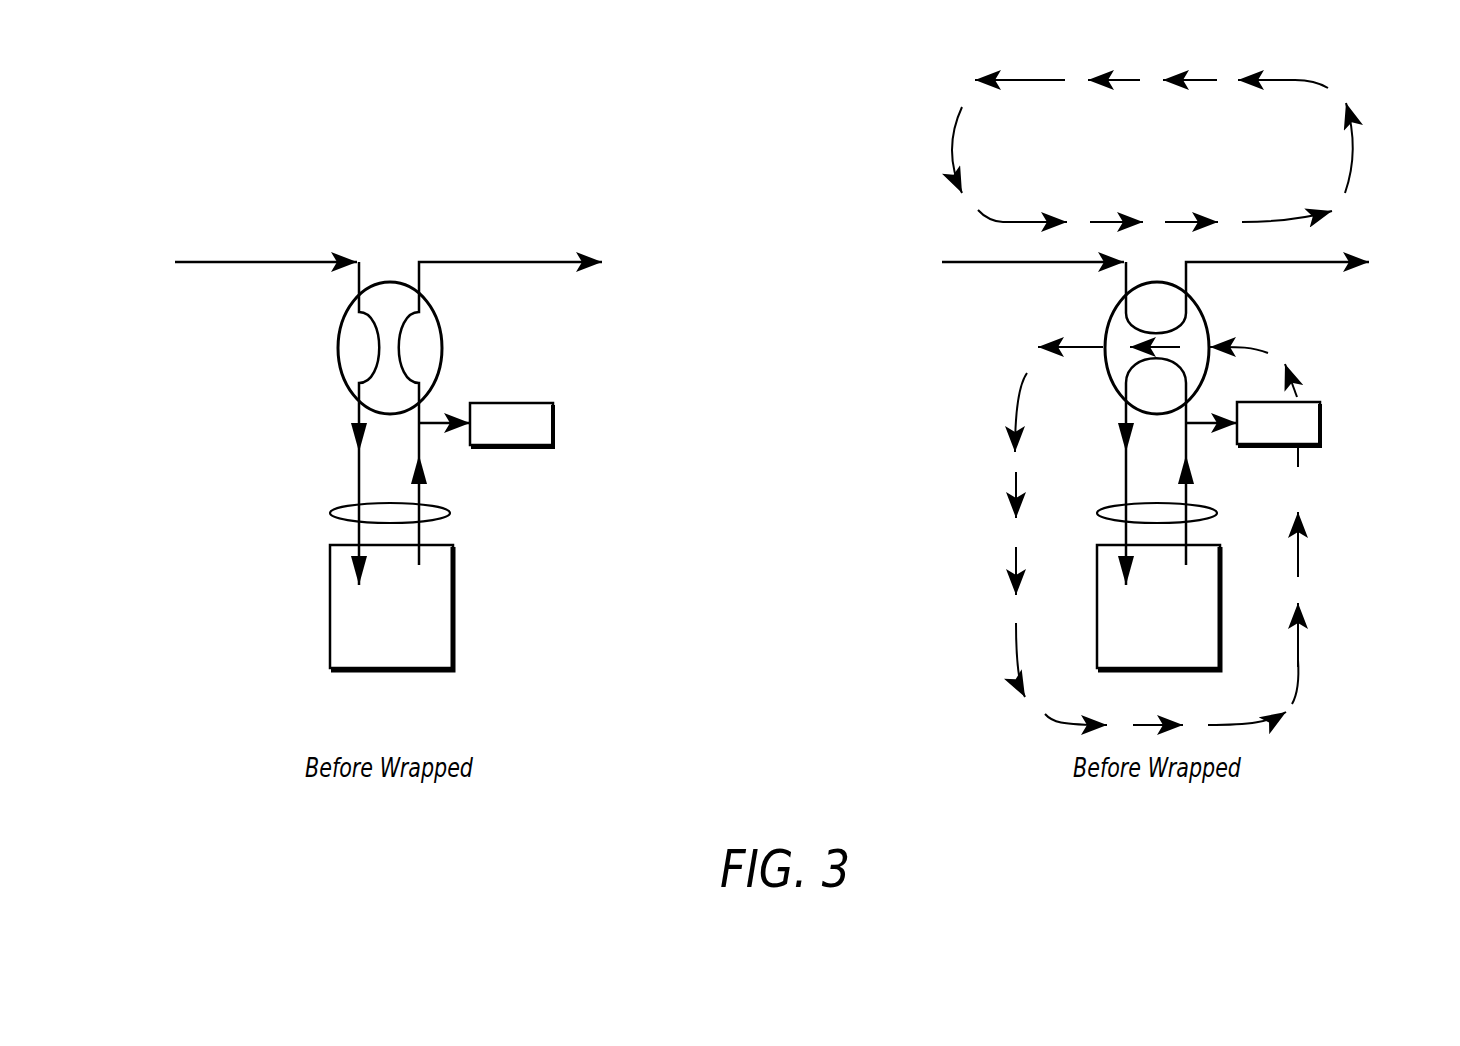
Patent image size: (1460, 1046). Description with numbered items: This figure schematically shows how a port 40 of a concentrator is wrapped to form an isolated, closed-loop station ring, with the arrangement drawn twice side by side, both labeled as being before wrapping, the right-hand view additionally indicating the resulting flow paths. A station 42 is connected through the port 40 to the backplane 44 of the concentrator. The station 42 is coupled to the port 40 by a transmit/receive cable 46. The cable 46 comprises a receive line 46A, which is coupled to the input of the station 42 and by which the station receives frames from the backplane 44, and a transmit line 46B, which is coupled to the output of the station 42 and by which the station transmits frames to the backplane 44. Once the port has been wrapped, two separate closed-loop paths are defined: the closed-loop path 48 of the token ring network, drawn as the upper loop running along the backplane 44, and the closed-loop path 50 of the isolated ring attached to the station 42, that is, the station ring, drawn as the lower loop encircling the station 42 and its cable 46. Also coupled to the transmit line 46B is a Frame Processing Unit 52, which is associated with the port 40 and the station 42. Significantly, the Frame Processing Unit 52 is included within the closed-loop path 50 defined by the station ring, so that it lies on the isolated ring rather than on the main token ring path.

The port 40 is at (340, 362).
The station 42 is at (330, 645).
The backplane 44 is at (228, 262).
The transmit/receive cable 46 is at (448, 512).
The receive line 46A is at (358, 535).
The transmit line 46B is at (420, 535).
The closed-loop path 48 is at (930, 137).
The closed-loop path 50 is at (997, 705).
The Frame Processing Unit (FPU) 52 is at (553, 427).